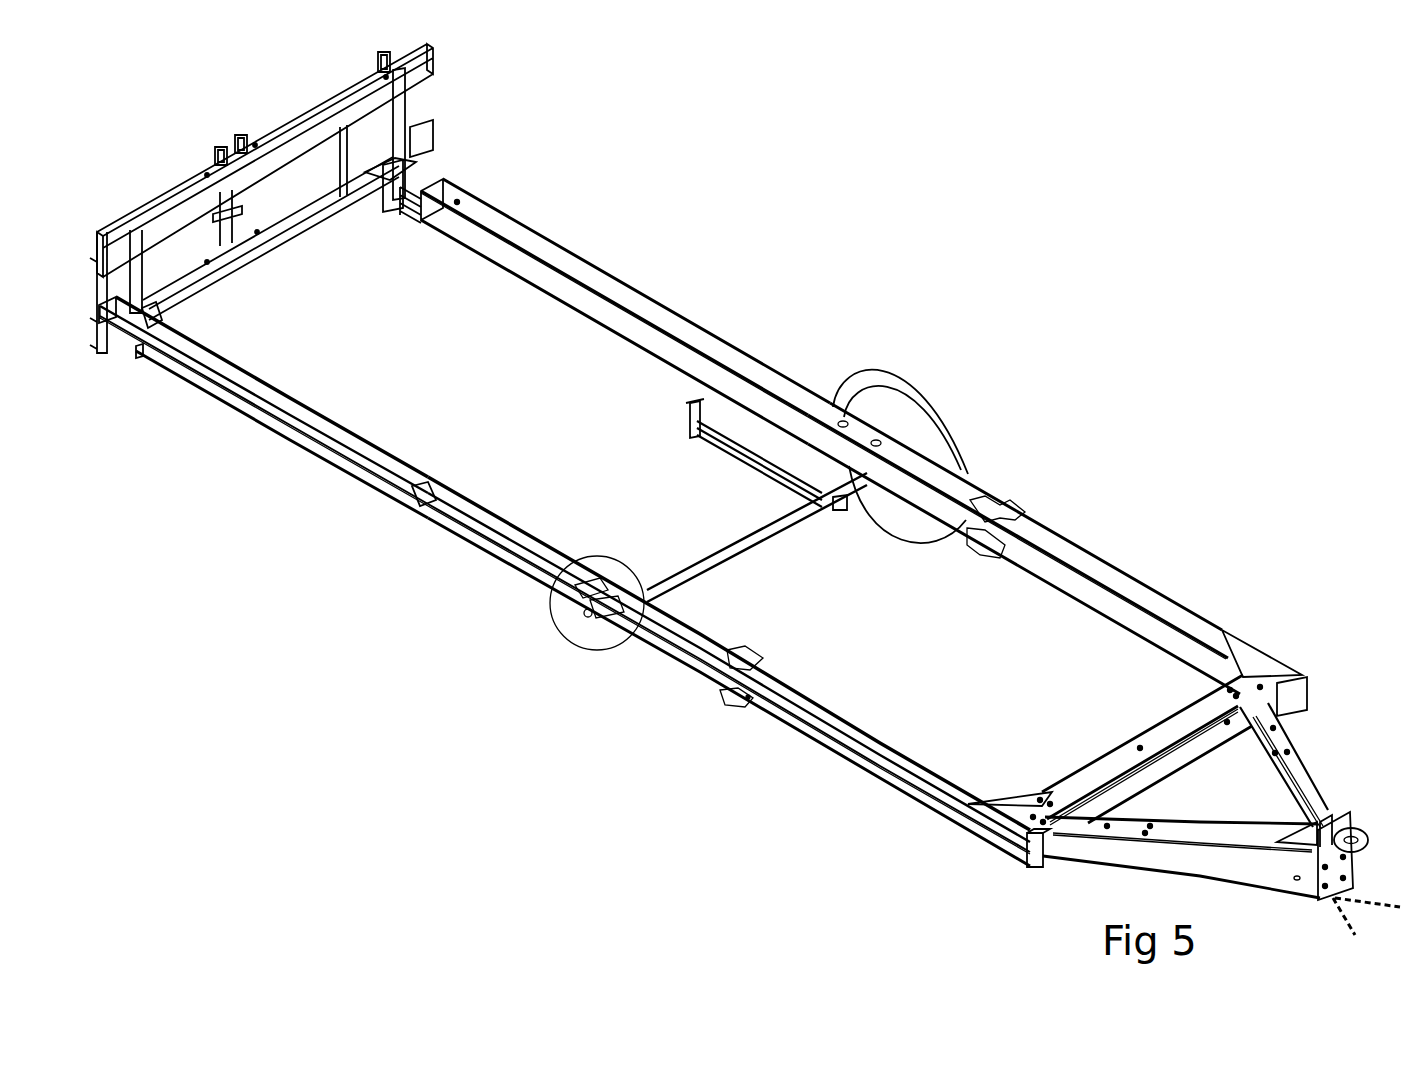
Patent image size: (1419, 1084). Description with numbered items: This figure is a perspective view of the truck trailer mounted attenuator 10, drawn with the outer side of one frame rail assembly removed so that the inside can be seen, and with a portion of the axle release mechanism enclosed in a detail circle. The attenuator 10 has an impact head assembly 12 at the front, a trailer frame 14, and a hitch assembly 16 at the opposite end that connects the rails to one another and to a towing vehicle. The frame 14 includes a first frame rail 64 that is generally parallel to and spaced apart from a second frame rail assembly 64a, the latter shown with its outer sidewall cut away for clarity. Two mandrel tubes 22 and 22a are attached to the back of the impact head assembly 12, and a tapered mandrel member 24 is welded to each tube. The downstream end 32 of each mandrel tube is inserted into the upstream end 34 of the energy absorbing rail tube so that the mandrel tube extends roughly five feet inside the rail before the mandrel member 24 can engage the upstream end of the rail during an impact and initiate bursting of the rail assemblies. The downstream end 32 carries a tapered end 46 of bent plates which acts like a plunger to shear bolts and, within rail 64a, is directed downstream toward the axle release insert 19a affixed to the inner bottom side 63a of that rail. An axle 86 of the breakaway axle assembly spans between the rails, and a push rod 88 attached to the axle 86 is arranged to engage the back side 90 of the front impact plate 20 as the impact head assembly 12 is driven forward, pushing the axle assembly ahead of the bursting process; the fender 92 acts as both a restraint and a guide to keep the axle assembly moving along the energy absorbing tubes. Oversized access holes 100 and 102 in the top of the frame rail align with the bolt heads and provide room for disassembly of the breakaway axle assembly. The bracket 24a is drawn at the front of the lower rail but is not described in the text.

The truck trailer mounted attenuator 10 is at (748, 203).
The impact head assembly 12 is at (445, 100).
The trailer frame 14 is at (1065, 546).
The hitch assembly 16 is at (1292, 768).
The axle release insert 19a is at (597, 592).
The front impact plate 20 is at (375, 110).
The mandrel tube 22 is at (430, 170).
The mandrel tube 22a is at (160, 353).
The tapered mandrel member 24 is at (393, 192).
The receiver bracket 24a is at (160, 326).
The downstream end of the mandrel tube 32 is at (390, 501).
The upstream end of the frame rail tube 34 is at (438, 222).
The tapered end 46 is at (433, 490).
The inner bottom side of the rail 63a is at (502, 547).
The first frame rail 64 is at (485, 216).
The second frame rail assembly 64a is at (232, 363).
The axle 86 is at (768, 540).
The push rod 88 is at (710, 437).
The back side of the front impact plate 90 is at (261, 236).
The fender 92 is at (888, 382).
The access hole 100 is at (842, 419).
The access hole 102 is at (882, 440).